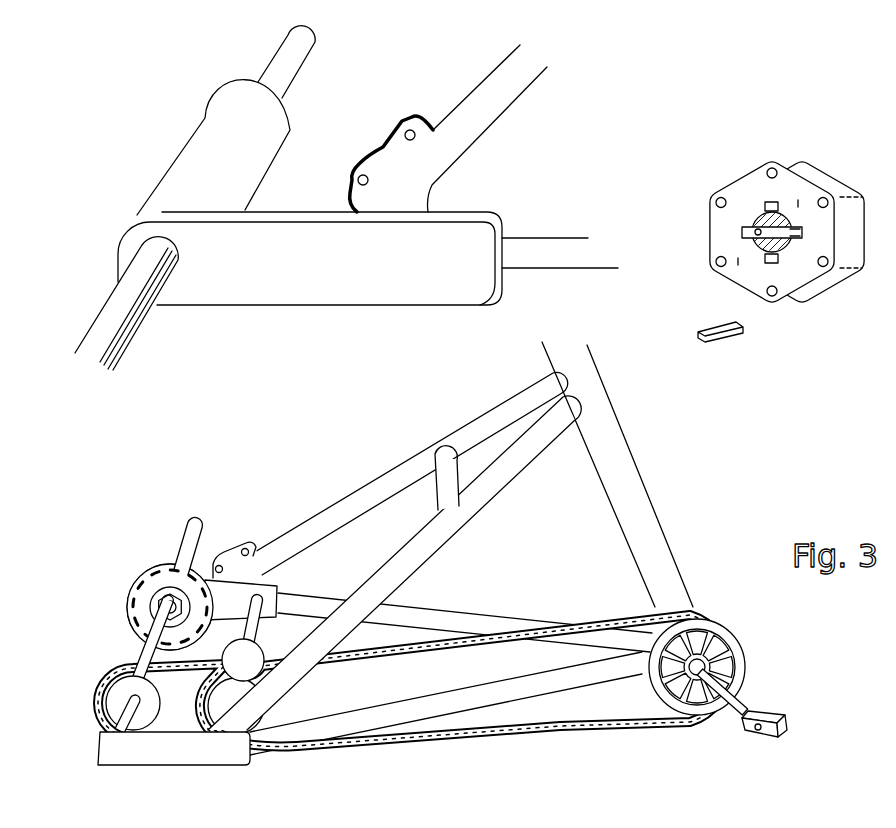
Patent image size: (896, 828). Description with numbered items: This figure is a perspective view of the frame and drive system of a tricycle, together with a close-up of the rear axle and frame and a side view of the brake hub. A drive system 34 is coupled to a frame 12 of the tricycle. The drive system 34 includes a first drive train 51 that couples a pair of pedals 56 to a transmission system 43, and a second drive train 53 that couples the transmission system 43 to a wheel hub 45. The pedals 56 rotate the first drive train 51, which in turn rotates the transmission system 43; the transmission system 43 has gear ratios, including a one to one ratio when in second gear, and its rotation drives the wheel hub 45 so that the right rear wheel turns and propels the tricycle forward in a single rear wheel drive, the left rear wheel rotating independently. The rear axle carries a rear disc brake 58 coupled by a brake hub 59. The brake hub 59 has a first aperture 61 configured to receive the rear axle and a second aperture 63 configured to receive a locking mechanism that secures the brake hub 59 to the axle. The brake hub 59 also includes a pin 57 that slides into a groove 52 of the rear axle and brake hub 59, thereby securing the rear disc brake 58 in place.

The frame 12 is at (472, 95).
The drive system 34 is at (90, 552).
The transmission system 43 is at (265, 722).
The wheel hub 45 is at (160, 700).
The first drive train 51 is at (458, 735).
The groove 52 is at (98, 366).
The second drive train 53 is at (120, 675).
The pair of pedals 56 is at (768, 714).
The pin 57 is at (732, 343).
The rear disc brake 58 is at (127, 594).
The brake hub 59 is at (822, 184).
The first aperture 61 is at (790, 230).
The second aperture 63 is at (757, 232).